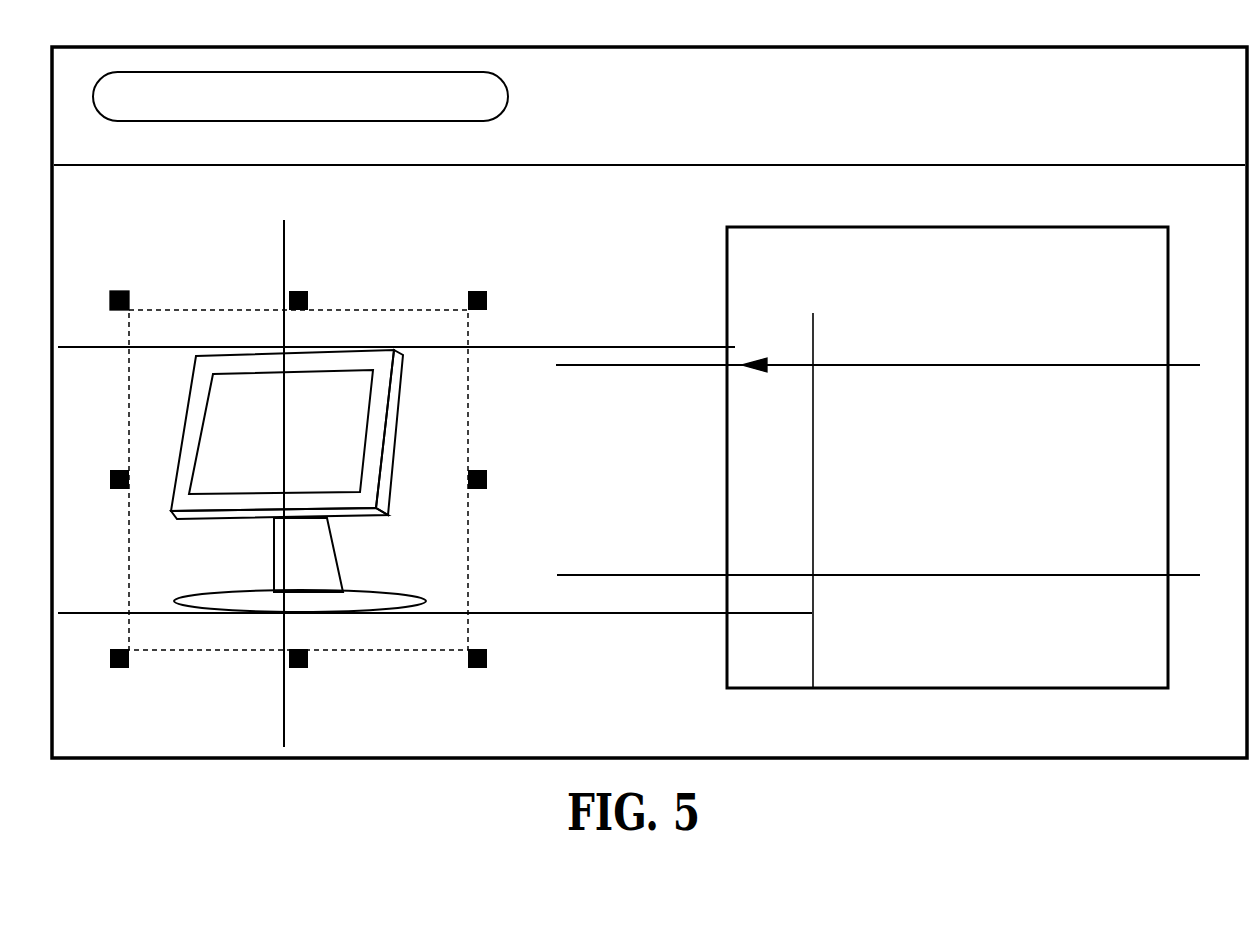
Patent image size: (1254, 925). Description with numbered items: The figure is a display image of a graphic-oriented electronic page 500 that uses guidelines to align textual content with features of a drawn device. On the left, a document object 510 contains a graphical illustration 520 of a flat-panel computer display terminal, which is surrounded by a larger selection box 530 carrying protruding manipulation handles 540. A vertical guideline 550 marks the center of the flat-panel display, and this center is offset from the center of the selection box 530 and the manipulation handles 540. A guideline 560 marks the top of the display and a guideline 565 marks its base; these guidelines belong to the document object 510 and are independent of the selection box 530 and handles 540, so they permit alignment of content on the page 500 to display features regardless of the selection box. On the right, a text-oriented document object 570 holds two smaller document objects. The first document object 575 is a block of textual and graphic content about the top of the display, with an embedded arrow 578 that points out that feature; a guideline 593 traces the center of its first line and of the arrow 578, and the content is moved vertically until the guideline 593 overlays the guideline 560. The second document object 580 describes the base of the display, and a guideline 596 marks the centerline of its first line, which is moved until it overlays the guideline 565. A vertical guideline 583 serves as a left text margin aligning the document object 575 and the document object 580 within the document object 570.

The electronic page 500 is at (953, 780).
The document object 510 is at (168, 683).
The graphical illustration 520 is at (242, 625).
The selection box 530 is at (129, 337).
The manipulation handles 540 is at (130, 293).
The vertical guideline 550 is at (285, 685).
The guideline 560 is at (78, 350).
The guideline 565 is at (115, 612).
The document object 570 is at (805, 227).
The document object 575 is at (1097, 350).
The embedded arrow 578 is at (767, 362).
The document object 580 is at (1122, 558).
The vertical guideline 583 is at (811, 652).
The guideline 593 is at (693, 366).
The guideline 596 is at (707, 577).